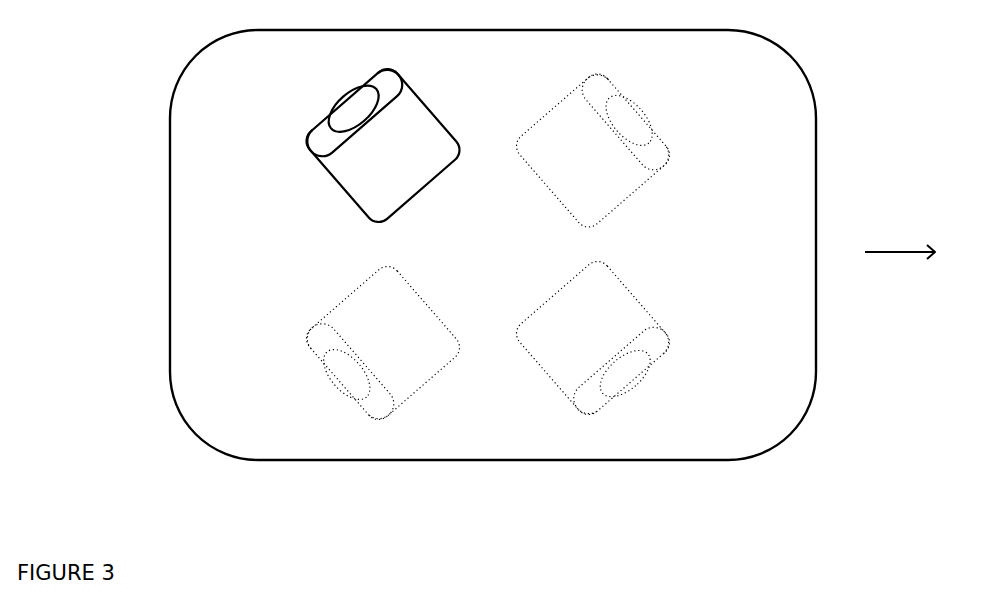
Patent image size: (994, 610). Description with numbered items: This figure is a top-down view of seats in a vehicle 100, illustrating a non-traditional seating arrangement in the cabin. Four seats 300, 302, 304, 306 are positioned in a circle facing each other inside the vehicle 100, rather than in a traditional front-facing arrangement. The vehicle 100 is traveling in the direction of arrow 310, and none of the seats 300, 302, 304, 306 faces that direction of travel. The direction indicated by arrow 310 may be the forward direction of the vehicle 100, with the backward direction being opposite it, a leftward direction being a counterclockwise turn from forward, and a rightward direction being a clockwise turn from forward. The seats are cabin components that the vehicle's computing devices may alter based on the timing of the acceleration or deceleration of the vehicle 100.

The vehicle 100 is at (290, 460).
The seat 300 is at (405, 165).
The seat 302 is at (405, 351).
The seat 304 is at (605, 165).
The seat 306 is at (578, 342).
The arrow 310 is at (905, 252).